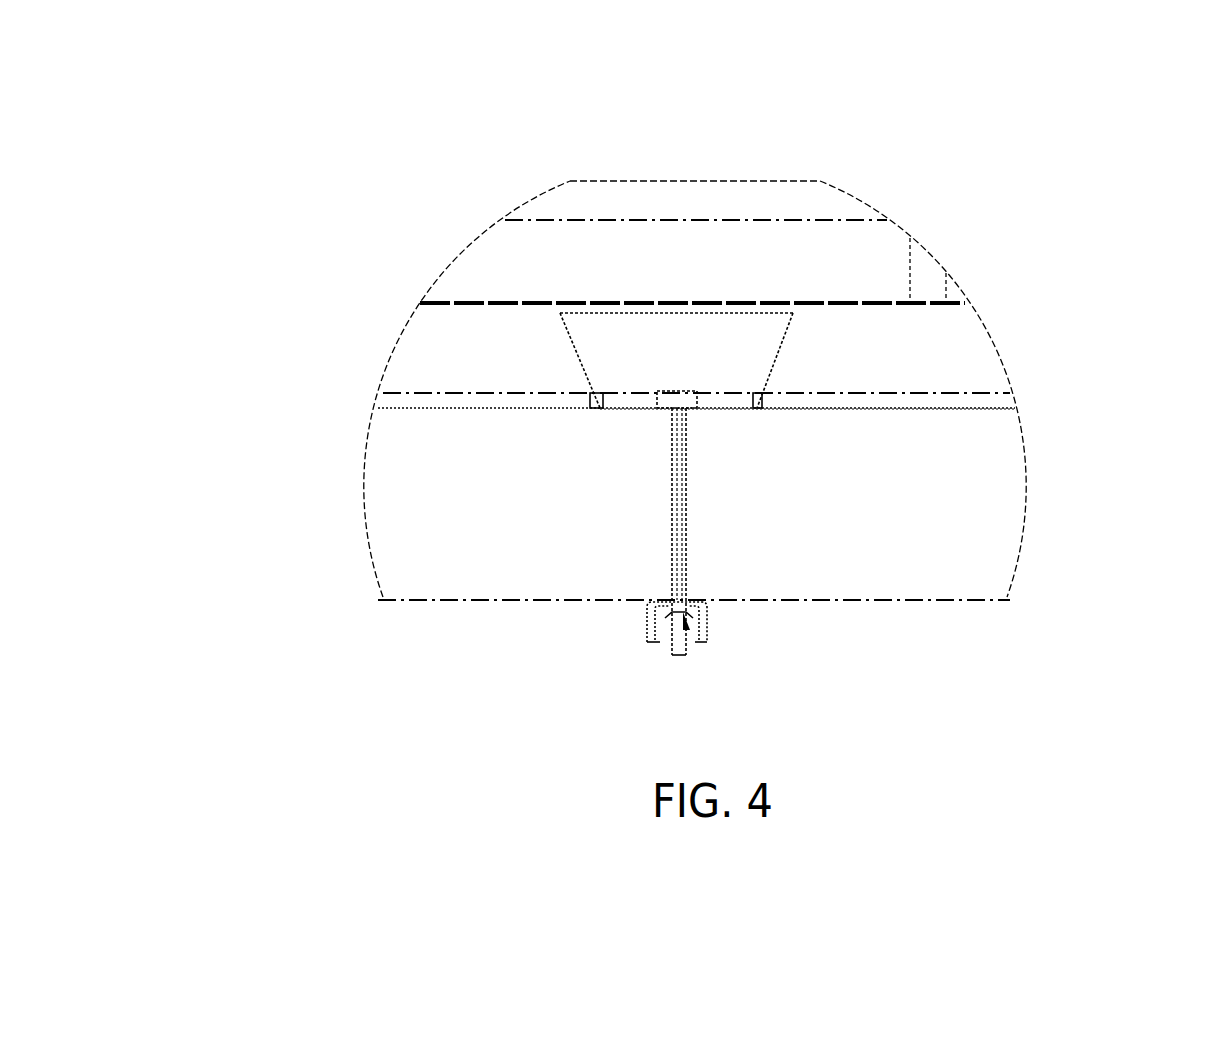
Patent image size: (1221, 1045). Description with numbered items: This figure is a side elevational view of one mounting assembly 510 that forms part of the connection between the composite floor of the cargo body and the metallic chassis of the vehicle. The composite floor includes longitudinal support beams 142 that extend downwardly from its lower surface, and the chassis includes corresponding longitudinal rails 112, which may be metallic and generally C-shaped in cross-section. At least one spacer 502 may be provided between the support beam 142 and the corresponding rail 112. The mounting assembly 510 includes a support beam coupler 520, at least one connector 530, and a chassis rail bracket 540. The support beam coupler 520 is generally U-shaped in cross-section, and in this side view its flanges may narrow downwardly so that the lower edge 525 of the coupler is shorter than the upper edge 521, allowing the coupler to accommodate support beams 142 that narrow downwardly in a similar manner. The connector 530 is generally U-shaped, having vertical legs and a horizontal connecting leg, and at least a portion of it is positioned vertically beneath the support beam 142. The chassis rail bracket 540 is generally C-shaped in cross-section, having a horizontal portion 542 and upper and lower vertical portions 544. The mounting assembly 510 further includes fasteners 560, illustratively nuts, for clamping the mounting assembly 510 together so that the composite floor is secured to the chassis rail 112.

The mounting assembly 510 is at (325, 188).
The longitudinal support beam 142 is at (951, 352).
The spacer 502 is at (388, 401).
The upper edge 521 is at (718, 312).
The support beam coupler 520 is at (755, 360).
The lower edge 525 is at (728, 410).
The connector 530 is at (675, 478).
The longitudinal rail 112 is at (1002, 560).
The horizontal portion 542 is at (670, 606).
The vertical portions 544 is at (648, 627).
The fasteners 560 is at (668, 617).
The chassis rail bracket 540 is at (686, 618).